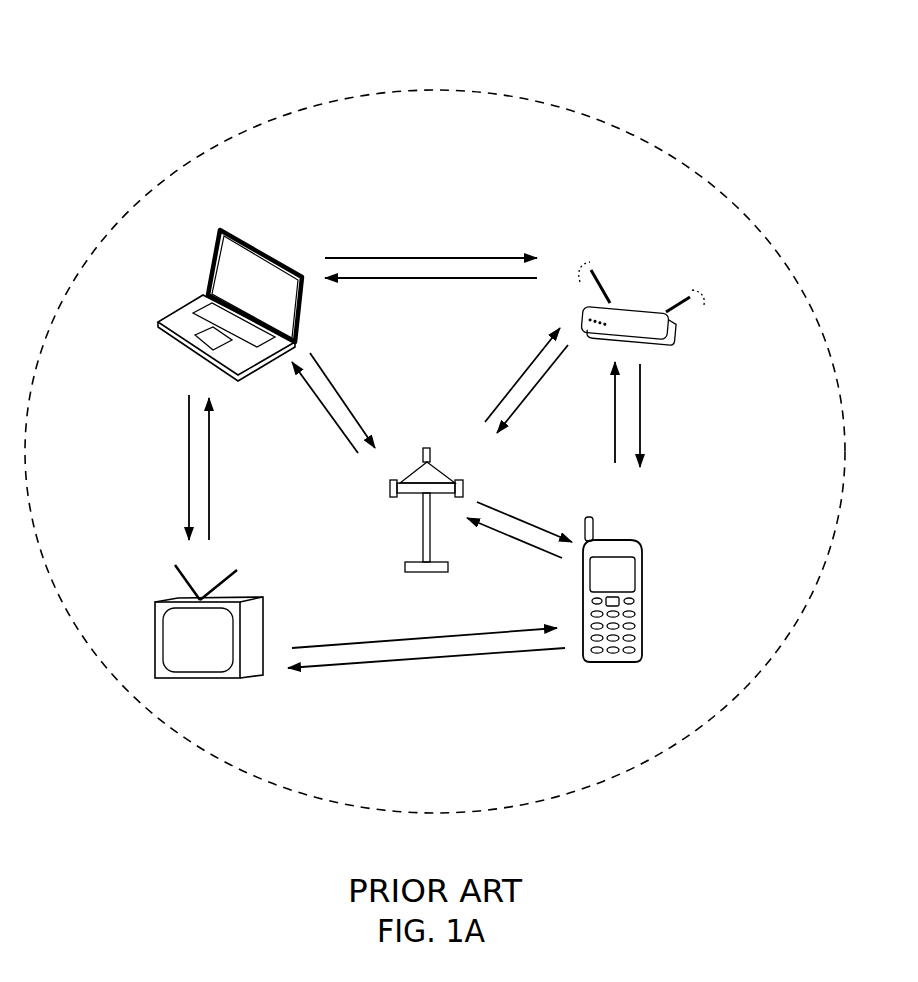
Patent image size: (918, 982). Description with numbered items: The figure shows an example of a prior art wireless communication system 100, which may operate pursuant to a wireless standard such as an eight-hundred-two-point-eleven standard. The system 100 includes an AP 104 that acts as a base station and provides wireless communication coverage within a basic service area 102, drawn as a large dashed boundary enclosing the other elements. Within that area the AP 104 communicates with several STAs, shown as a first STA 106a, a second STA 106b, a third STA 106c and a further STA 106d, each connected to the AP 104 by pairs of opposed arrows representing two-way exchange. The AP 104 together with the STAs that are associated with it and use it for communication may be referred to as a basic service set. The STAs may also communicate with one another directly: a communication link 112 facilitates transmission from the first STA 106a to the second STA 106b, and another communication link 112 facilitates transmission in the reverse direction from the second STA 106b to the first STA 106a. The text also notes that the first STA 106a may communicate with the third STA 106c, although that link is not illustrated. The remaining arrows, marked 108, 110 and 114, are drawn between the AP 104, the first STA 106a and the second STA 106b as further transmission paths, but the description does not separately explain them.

The wireless communication system 100 is at (435, 410).
The basic service area 102 is at (780, 255).
The AP 104 is at (425, 448).
The first STA 106a is at (617, 540).
The second STA 106b is at (255, 597).
The third STA 106c is at (228, 232).
The wireless router station 106d is at (648, 312).
The downlink transmission from access point to mobile phone 108 is at (510, 503).
The uplink transmission from mobile phone to access point 110 is at (490, 550).
The communication link 112 is at (377, 633).
The direct transmission from mobile phone to television 114 is at (418, 677).